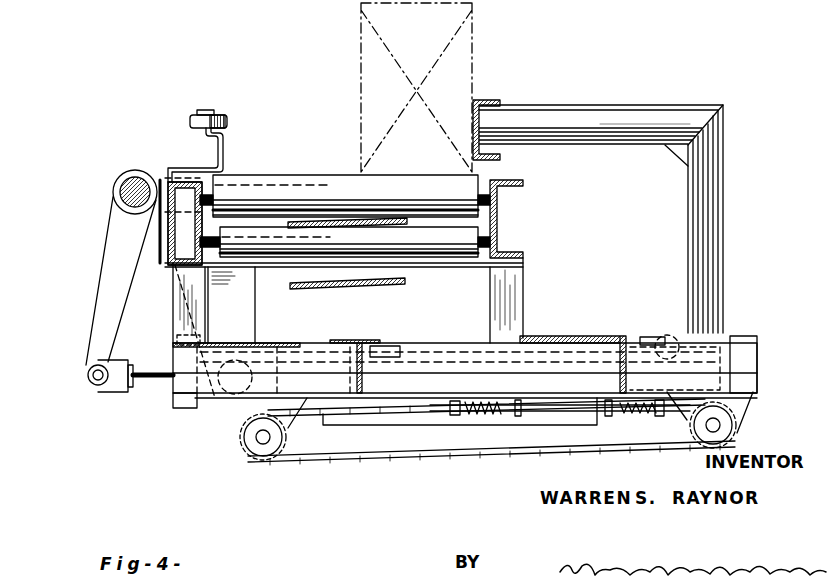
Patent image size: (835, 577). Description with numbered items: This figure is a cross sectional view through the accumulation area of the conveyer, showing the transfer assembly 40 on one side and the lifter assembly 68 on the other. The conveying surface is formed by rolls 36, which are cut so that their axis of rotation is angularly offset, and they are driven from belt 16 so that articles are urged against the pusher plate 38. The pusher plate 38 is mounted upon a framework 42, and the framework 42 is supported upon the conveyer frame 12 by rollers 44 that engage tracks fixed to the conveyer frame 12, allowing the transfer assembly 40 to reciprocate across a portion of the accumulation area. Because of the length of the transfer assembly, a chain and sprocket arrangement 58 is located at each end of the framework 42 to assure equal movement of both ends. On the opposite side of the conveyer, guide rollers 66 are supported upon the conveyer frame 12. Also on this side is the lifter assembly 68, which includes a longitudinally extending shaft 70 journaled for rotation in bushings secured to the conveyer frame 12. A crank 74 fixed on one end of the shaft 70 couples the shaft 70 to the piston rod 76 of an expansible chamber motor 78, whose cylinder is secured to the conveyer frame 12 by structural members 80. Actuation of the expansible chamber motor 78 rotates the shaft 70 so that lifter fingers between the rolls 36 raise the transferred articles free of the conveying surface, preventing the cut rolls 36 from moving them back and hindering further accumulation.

The conveyer frame 12 is at (200, 248).
The belt 16 is at (407, 282).
The rolls 36 is at (423, 199).
The pusher plate 38 is at (470, 112).
The transfer assembly 40 is at (738, 156).
The framework 42 is at (622, 145).
The rollers 44 is at (390, 346).
The chain and sprocket arrangement 58 is at (380, 462).
The guide rollers 66 is at (228, 120).
The lifter assembly 68 is at (95, 274).
The shaft 70 is at (130, 172).
The crank 74 is at (112, 315).
The piston rod 76 is at (160, 383).
The expansible chamber motor 78 is at (210, 402).
The structural members 80 is at (245, 314).